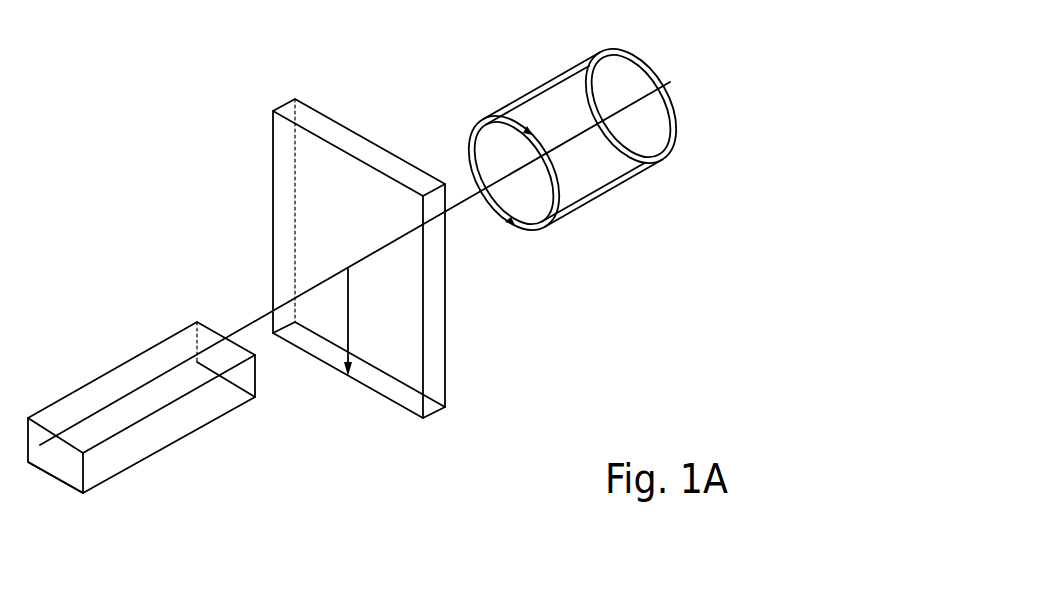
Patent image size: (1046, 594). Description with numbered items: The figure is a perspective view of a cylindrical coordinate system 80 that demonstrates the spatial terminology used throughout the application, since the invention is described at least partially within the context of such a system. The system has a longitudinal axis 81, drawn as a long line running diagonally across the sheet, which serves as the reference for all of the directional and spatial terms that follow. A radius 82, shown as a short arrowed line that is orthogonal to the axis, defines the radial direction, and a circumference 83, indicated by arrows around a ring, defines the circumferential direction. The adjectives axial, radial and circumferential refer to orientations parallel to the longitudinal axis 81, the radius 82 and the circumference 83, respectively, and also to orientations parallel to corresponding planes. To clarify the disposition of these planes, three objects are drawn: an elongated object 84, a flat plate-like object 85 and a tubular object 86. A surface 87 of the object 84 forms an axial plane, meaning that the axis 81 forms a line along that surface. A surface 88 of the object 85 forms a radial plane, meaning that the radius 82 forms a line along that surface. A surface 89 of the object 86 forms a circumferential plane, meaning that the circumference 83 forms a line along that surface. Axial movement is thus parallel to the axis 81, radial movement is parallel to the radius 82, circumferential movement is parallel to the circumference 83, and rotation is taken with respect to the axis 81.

The cylindrical coordinate system 80 is at (232, 147).
The longitudinal axis 81 is at (663, 102).
The radius 82 is at (348, 315).
The circumference 83 is at (470, 138).
The object 84 is at (108, 482).
The object 85 is at (458, 415).
The object 86 is at (602, 209).
The surface 87 is at (103, 388).
The surface 88 is at (287, 220).
The surface 89 is at (538, 82).